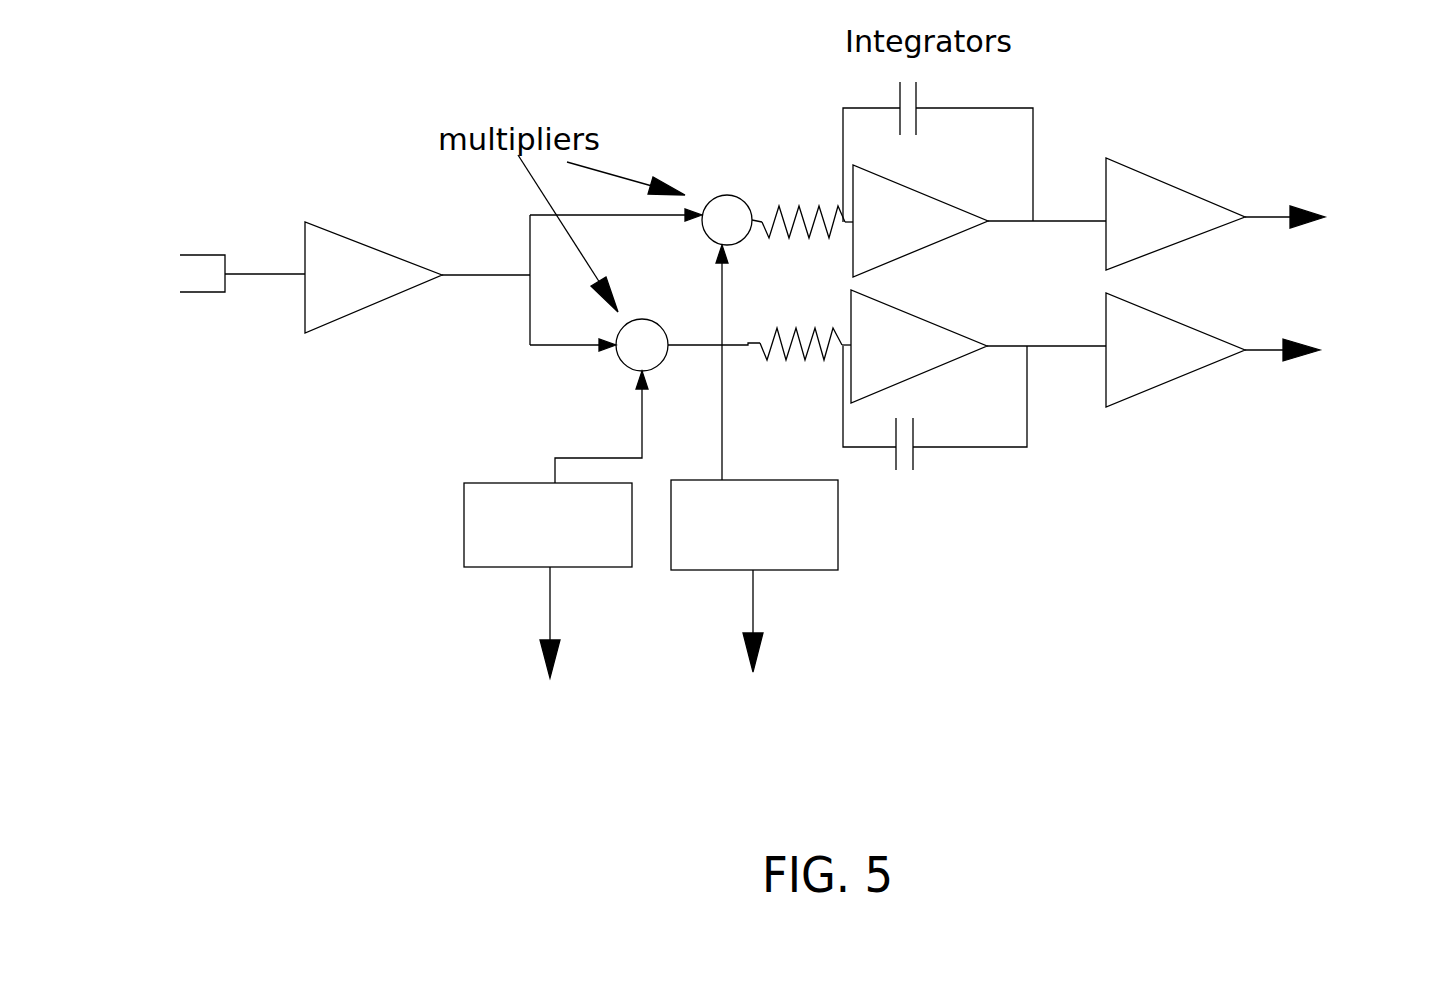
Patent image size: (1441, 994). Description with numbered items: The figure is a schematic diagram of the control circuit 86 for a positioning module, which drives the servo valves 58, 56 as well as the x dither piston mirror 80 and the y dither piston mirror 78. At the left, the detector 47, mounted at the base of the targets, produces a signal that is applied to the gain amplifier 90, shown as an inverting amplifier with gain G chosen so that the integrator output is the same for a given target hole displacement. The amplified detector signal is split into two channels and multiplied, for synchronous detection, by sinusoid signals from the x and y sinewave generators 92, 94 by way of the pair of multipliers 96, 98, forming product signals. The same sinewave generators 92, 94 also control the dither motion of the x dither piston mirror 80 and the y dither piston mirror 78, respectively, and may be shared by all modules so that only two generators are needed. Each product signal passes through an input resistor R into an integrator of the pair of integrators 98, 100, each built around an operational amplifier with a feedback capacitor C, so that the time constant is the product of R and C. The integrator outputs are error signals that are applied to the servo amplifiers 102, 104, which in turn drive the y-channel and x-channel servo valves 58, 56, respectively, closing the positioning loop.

The control circuit 86 is at (262, 120).
The detector 47 is at (213, 255).
The gain amplifier 90 is at (363, 240).
The multiplier 96 is at (733, 195).
The multiplier 98 is at (640, 318).
The integrator 100 is at (1042, 430).
The servo amplifier 102 is at (1135, 185).
The servo amplifier 104 is at (1138, 325).
The servo valve 58 is at (1314, 213).
The servo valve 56 is at (1310, 348).
The x sinewave generator 92 is at (527, 500).
The y sinewave generator 94 is at (800, 493).
The x dither piston mirror 80 is at (528, 696).
The y dither piston mirror 78 is at (798, 698).